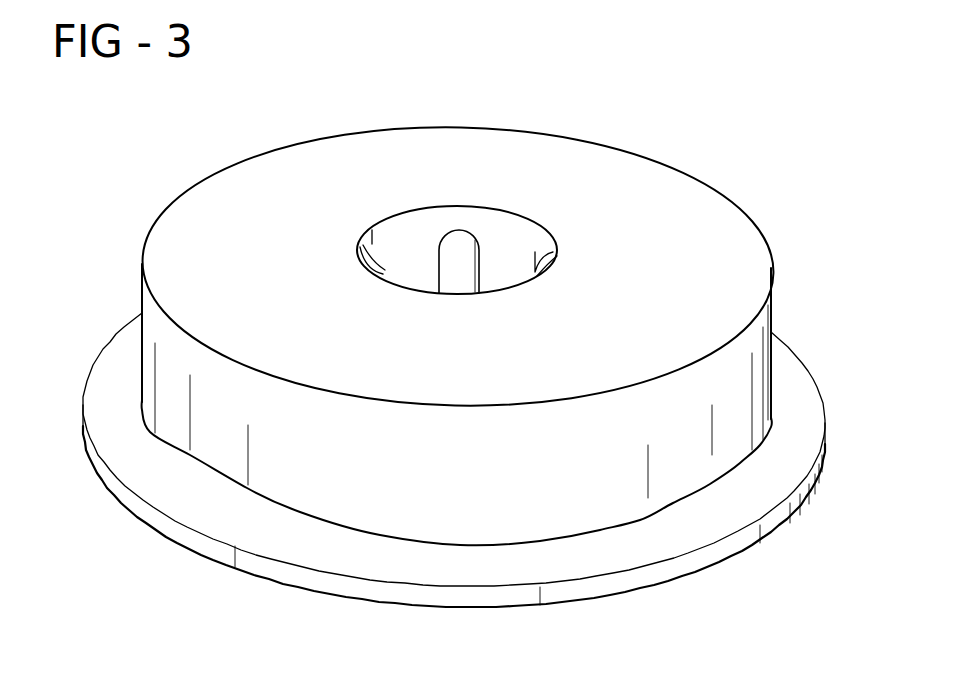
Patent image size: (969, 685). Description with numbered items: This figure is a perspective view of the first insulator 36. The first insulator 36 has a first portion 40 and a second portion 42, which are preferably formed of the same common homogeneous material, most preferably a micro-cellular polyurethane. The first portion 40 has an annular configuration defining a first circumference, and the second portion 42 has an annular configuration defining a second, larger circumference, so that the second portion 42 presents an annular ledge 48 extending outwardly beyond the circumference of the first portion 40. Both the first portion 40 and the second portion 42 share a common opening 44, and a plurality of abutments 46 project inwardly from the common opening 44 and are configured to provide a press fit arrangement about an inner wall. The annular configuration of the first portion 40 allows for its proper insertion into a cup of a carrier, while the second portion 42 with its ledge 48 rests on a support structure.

The first insulator 36 is at (775, 313).
The first portion 40 is at (218, 232).
The second portion 42 is at (260, 565).
The common opening 44 is at (402, 240).
The abutments 46 is at (460, 248).
The ledge 48 is at (702, 523).